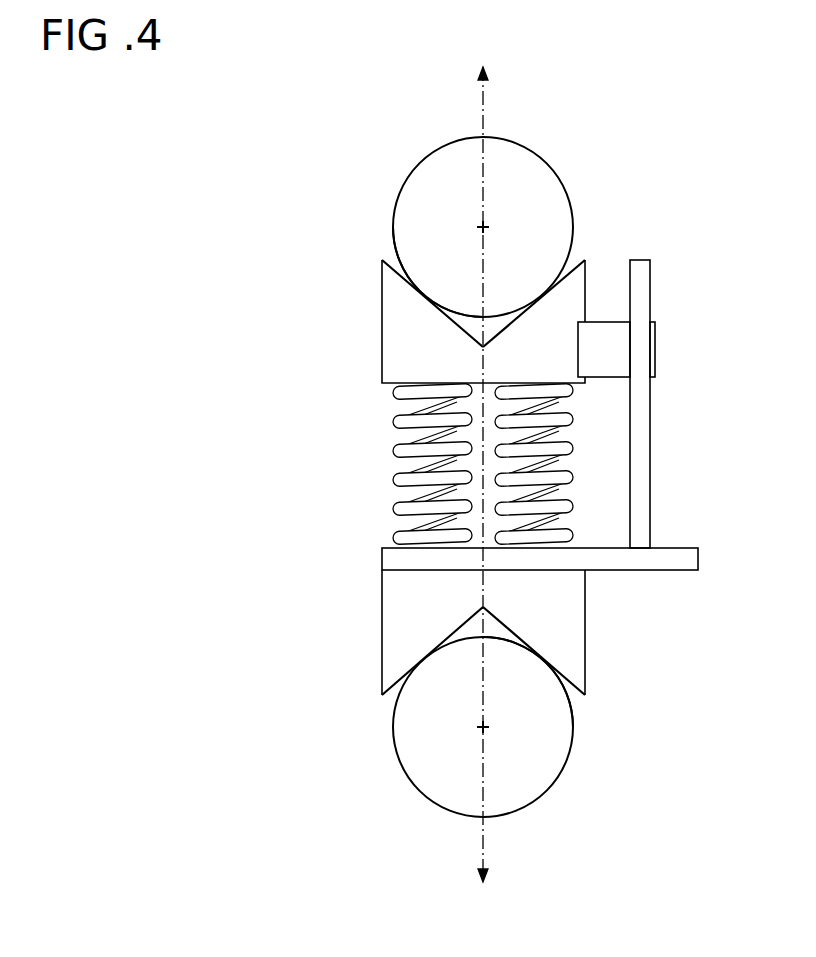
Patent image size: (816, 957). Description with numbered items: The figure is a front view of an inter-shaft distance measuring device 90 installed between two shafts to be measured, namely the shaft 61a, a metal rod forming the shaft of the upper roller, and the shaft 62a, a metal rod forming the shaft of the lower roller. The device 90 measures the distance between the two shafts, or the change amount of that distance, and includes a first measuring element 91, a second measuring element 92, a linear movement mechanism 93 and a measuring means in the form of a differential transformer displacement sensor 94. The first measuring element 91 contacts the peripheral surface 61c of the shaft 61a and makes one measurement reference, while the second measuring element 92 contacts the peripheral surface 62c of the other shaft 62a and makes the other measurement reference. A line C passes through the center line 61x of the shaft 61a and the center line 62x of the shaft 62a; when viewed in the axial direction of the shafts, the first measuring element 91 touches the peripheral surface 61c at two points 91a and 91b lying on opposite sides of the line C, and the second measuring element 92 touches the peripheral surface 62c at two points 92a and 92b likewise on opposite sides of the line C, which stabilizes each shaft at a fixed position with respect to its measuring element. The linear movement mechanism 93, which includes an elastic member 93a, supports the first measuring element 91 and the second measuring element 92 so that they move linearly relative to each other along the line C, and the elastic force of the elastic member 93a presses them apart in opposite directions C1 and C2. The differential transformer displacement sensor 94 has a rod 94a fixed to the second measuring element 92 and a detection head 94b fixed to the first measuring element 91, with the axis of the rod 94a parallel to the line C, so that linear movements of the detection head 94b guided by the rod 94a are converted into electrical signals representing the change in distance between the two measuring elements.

The shaft 61a is at (436, 164).
The peripheral surface 61c is at (393, 221).
The center line 61x is at (484, 226).
The shaft 62a is at (438, 782).
The peripheral surface 62c is at (575, 735).
The center line 62x is at (485, 729).
The inter-shaft distance measuring device 90 is at (353, 348).
The first measuring element 91 is at (382, 283).
The contact point 91a is at (379, 303).
The contact point 91b is at (578, 280).
The second measuring element 92 is at (387, 622).
The contact point 92a is at (383, 657).
The contact point 92b is at (579, 651).
The linear movement mechanism 93 is at (390, 452).
The elastic member 93a is at (398, 505).
The differential transformer displacement sensor 94 is at (673, 405).
The rod 94a is at (643, 503).
The detection head 94b is at (658, 330).
The line C is at (486, 158).
The direction C1 is at (484, 61).
The direction C2 is at (484, 893).